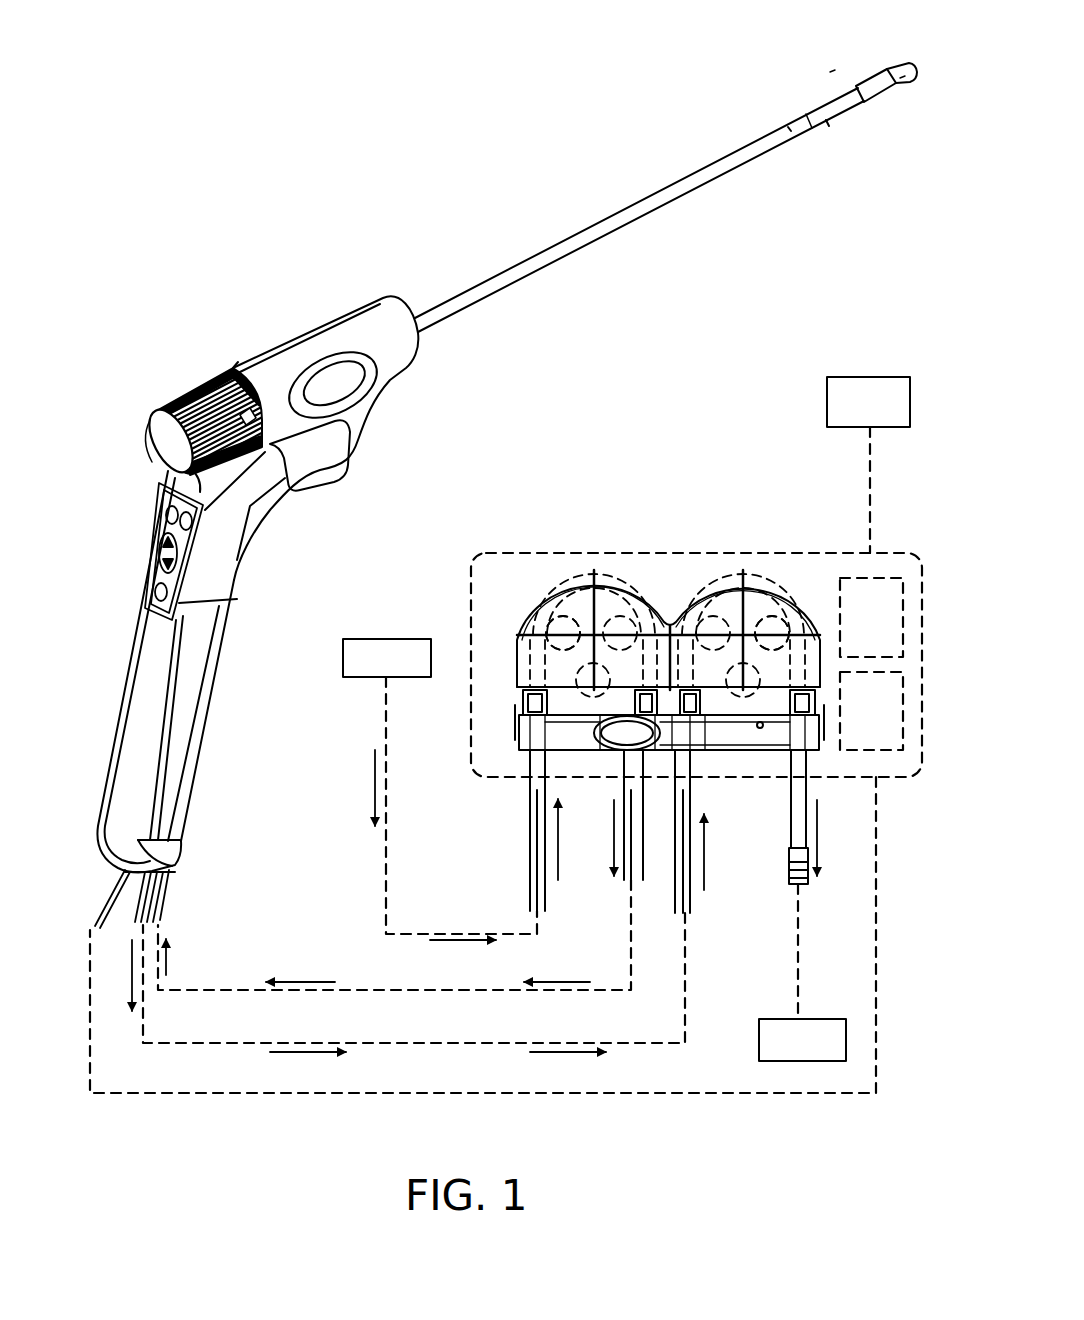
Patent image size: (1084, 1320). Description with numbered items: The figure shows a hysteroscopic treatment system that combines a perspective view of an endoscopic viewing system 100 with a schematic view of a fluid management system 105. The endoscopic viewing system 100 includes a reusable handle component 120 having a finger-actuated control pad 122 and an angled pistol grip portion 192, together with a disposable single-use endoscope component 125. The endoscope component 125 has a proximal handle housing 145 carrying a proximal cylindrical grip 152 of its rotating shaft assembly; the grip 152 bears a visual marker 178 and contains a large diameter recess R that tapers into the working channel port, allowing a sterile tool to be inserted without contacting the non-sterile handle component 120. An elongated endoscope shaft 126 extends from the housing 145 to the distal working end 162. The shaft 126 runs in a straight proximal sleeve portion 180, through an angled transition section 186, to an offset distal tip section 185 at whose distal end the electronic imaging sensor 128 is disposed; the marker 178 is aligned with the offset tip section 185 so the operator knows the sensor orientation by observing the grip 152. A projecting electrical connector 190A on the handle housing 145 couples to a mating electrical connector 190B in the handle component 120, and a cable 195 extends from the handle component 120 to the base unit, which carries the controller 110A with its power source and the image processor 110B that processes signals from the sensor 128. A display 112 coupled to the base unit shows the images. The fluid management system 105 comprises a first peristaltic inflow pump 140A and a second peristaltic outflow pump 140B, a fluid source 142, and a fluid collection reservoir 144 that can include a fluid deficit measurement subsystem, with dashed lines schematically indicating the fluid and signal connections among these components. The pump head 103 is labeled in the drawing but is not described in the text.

The endoscopic viewing system 100 is at (505, 449).
The pump head / cassette 103 is at (622, 553).
The fluid management system 105 is at (702, 494).
The controller 110A is at (871, 711).
The image processor 110B is at (871, 617).
The display 112 is at (868, 465).
The handle component 120 is at (152, 487).
The finger-actuated control pad 122 is at (160, 531).
The single-use endoscope component 125 is at (381, 299).
The endoscope shaft 126 is at (591, 190).
The distal electronic imaging sensor 128 is at (930, 50).
The first peristaltic inflow pump 140A is at (560, 630).
The second peristaltic outflow pump 140B is at (772, 630).
The fluid source 142 is at (440, 786).
The fluid collection reservoir 144 is at (802, 972).
The proximal handle housing 145 is at (360, 430).
The proximal cylindrical grip 152 is at (170, 392).
The distal working end 162 is at (826, 67).
The visual marker 178 is at (246, 418).
The straight proximal sleeve portion 180 is at (826, 120).
The offset distal tip section 185 is at (902, 96).
The transition section 186 is at (878, 96).
The projecting electrical connector 190A is at (530, 856).
The mating electrical connector 190B is at (793, 830).
The angled pistol grip portion 192 is at (218, 640).
The cable 195 is at (122, 895).
The recess R is at (162, 428).